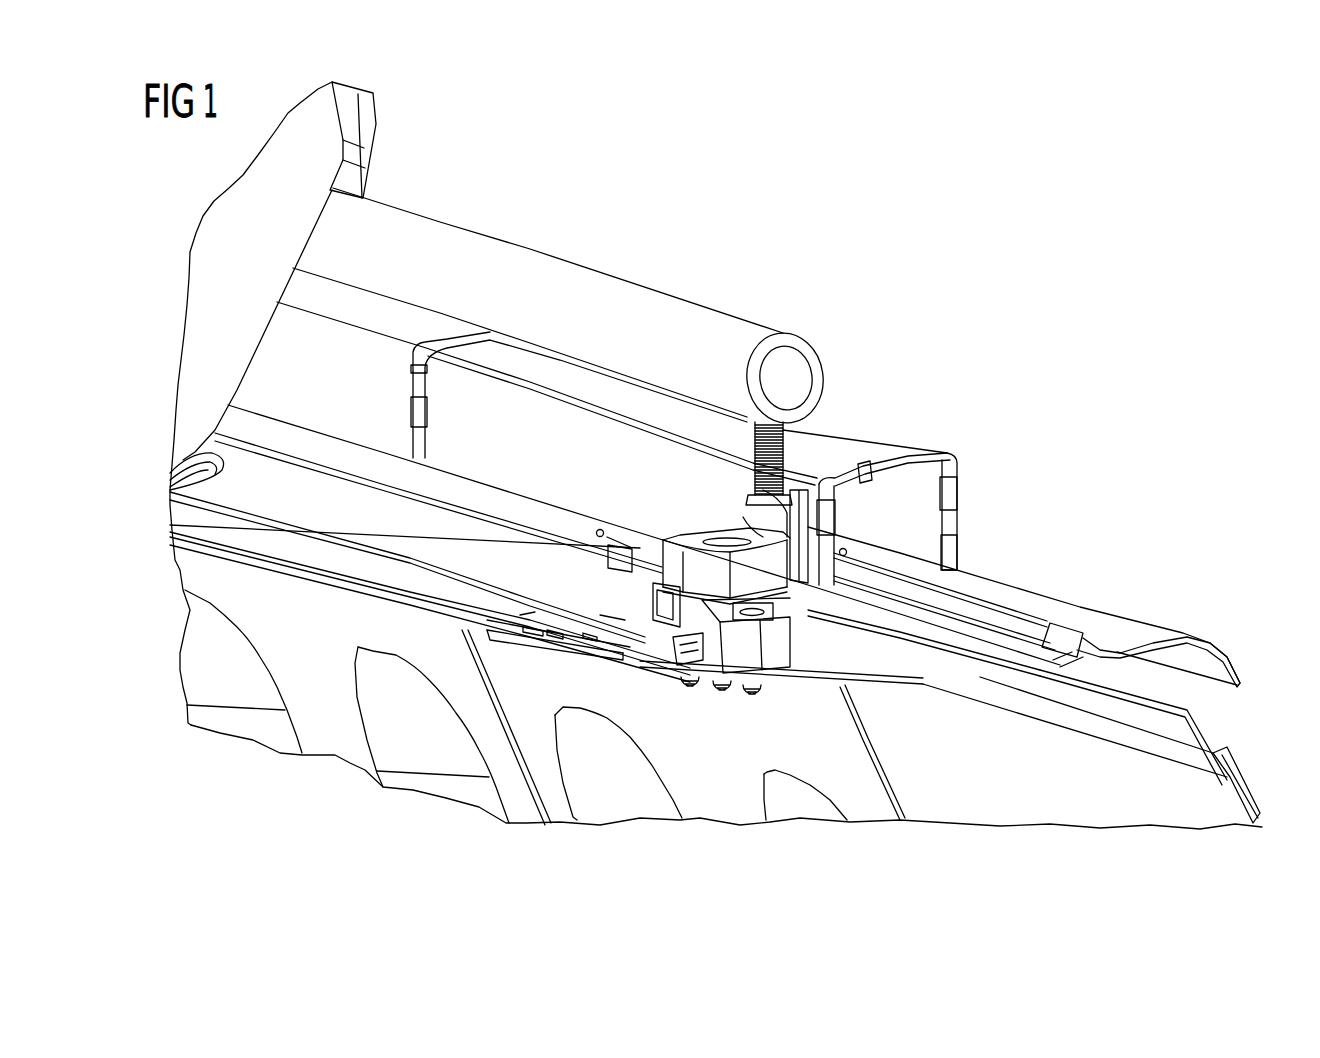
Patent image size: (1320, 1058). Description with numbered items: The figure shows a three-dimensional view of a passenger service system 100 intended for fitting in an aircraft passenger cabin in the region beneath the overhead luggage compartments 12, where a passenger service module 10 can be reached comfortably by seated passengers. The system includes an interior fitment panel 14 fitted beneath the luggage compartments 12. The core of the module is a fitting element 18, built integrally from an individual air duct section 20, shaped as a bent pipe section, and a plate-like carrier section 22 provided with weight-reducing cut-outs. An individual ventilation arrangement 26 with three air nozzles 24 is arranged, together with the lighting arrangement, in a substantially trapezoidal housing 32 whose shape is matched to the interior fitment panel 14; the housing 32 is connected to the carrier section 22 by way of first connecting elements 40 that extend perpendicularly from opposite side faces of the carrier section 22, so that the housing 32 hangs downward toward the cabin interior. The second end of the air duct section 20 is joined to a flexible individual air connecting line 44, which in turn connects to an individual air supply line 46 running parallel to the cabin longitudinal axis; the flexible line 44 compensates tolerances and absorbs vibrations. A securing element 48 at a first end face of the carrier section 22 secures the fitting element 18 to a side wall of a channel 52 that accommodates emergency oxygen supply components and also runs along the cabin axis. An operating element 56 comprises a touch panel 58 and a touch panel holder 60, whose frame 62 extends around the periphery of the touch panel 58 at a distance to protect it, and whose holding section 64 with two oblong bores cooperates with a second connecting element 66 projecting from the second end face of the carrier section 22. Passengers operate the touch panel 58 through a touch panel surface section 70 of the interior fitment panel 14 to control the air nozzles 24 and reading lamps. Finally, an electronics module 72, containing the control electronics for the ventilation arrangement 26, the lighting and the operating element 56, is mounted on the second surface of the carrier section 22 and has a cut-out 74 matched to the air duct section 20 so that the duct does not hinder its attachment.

The passenger service system 100 is at (960, 400).
The passenger service module 10 is at (697, 589).
The overhead luggage compartments 12 is at (252, 328).
The interior fitment panel 14 is at (777, 677).
The fitting element 18 is at (806, 602).
The individual air duct section 20 is at (770, 517).
The carrier section 22 is at (783, 603).
The air nozzles 24 is at (743, 688).
The individual ventilation arrangement 26 is at (678, 690).
The housing 32 is at (760, 665).
The first connecting elements 40 is at (735, 615).
The individual air connecting line 44 is at (786, 433).
The individual air supply line 46 is at (694, 318).
The securing element 48 is at (836, 511).
The channel 52 is at (960, 462).
The operating element 56 is at (440, 611).
The touch panel 58 is at (500, 638).
The touch panel holder 60 is at (592, 606).
The frame 62 is at (520, 610).
The holding section 64 is at (663, 672).
The second connecting element 66 is at (655, 580).
The touch panel surface section 70 is at (563, 650).
The electronics module 72 is at (687, 537).
The cut-out 74 is at (747, 532).